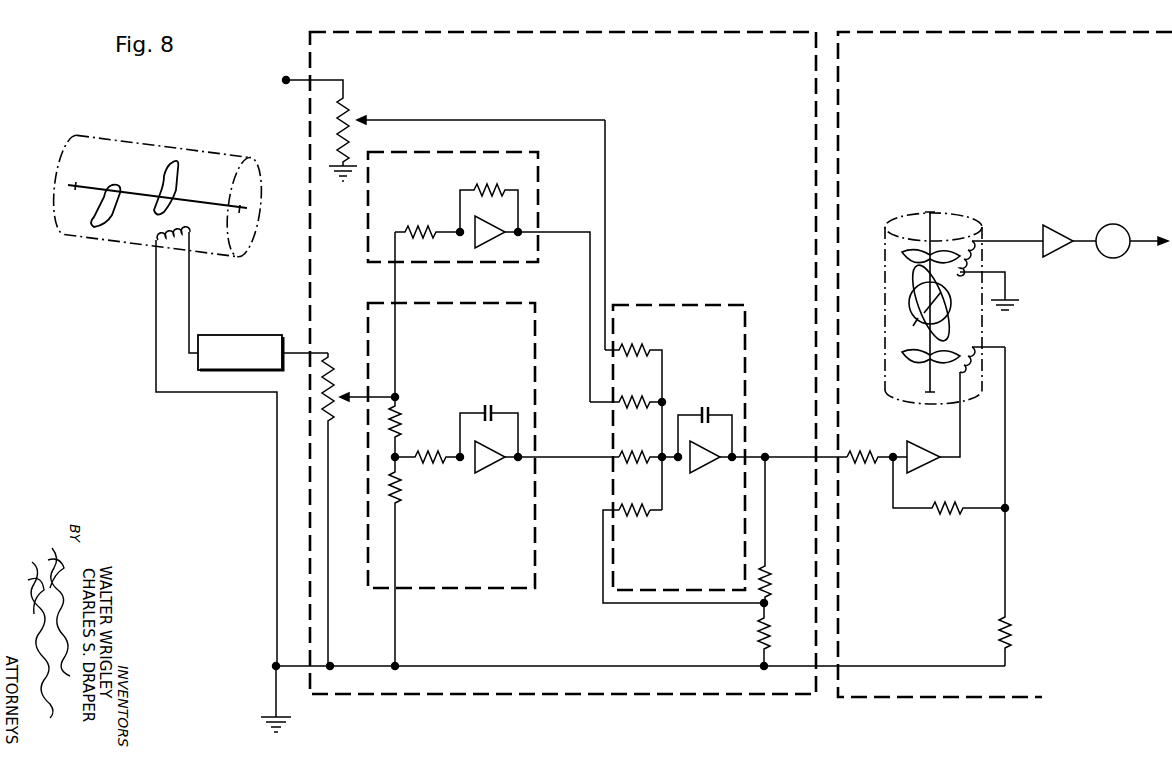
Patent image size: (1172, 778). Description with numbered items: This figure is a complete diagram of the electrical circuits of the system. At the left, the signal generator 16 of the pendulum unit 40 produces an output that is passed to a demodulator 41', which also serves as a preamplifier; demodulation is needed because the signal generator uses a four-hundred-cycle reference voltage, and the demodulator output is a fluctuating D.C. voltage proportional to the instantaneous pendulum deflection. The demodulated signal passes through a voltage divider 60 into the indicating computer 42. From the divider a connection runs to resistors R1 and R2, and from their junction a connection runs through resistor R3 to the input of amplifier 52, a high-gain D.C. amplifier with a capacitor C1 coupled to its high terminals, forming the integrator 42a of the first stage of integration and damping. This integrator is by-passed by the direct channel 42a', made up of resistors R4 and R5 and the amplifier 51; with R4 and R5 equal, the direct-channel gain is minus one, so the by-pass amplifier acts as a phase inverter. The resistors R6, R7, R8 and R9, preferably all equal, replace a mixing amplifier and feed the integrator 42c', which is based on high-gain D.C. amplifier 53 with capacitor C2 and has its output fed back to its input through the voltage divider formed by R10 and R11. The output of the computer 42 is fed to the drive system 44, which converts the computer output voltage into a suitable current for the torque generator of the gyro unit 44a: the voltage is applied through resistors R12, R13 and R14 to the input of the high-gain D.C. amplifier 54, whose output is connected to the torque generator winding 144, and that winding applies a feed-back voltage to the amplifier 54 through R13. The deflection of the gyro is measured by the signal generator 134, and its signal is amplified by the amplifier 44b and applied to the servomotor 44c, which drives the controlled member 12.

The pendulum unit 40 is at (160, 147).
The signal generator 16 is at (168, 246).
The demodulator 41' is at (263, 340).
The voltage divider 60 is at (335, 364).
The computer 42 is at (563, 363).
The by-pass amplifier 42a' is at (453, 221).
The integrator 42a is at (451, 462).
The integrator 42c' is at (679, 463).
The amplifier 51 is at (497, 243).
The amplifier 52 is at (489, 473).
The amplifier 53 is at (705, 473).
The amplifier 54 is at (934, 470).
The drive system 44 is at (1005, 364).
The gyro unit 44a is at (886, 294).
The amplifier 44b is at (1062, 232).
The servomotor 44c is at (1115, 258).
The signal generator 134 is at (978, 247).
The torque generator winding 144 is at (966, 375).
The controlled member 12 is at (1149, 228).
The resistor R1 is at (400, 433).
The resistor R2 is at (400, 494).
The resistor R3 is at (420, 453).
The resistor R4 is at (428, 212).
The resistor R5 is at (485, 190).
The resistor R6 is at (632, 344).
The resistor R7 is at (632, 398).
The resistor R8 is at (632, 452).
The resistor R9 is at (632, 506).
The resistor R10 is at (770, 574).
The resistor R11 is at (770, 640).
The resistor R12 is at (854, 452).
The resistor R13 is at (942, 518).
The resistor R14 is at (1012, 624).
The capacitor C1 is at (483, 404).
The capacitor C2 is at (700, 405).